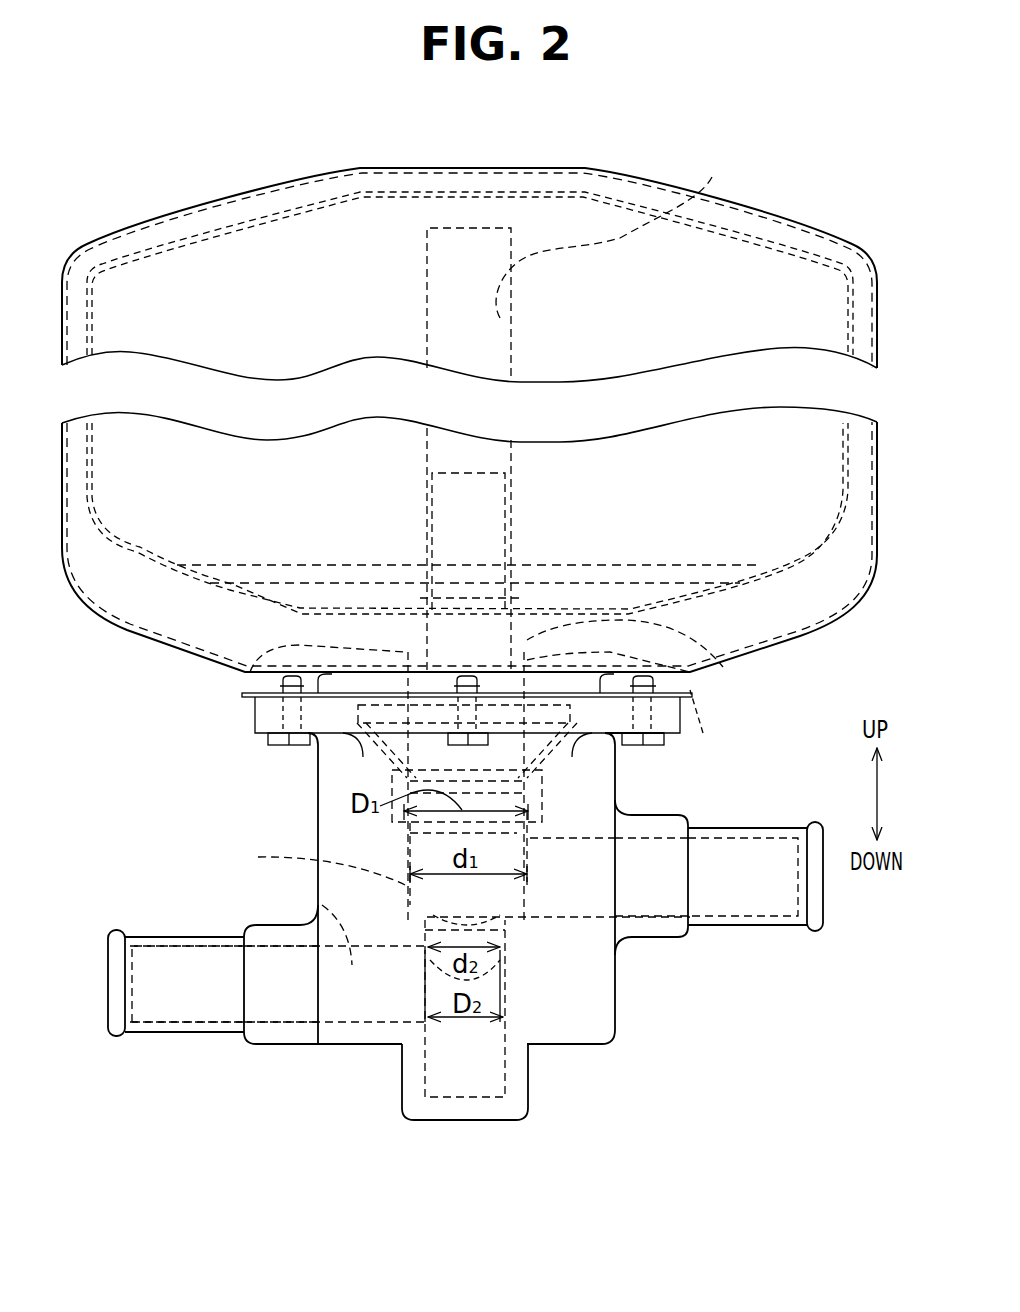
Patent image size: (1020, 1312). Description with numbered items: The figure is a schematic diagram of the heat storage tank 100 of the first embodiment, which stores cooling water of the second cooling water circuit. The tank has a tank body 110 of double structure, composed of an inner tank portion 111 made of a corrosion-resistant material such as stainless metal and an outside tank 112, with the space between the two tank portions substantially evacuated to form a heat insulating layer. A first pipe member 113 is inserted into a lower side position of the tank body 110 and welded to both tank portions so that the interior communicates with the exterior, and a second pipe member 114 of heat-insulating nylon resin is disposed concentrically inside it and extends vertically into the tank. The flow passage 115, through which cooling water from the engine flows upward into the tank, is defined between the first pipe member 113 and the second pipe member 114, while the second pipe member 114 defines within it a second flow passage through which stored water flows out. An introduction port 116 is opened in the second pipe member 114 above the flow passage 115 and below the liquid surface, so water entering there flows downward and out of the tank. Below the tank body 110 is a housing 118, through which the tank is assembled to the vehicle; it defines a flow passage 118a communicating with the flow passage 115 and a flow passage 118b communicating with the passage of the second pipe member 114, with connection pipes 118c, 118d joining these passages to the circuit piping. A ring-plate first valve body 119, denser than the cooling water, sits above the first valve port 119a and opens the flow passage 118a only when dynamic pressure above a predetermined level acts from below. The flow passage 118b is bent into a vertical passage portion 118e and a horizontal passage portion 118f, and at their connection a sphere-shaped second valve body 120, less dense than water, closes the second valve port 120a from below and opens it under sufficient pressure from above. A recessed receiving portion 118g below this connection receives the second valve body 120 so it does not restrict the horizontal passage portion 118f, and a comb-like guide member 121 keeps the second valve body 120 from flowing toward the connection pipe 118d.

The heat storage tank 100 is at (477, 449).
The tank body 110 is at (760, 652).
The inner tank portion 111 is at (823, 540).
The outside tank 112 is at (796, 640).
The first pipe member 113 is at (706, 664).
The second pipe member 114 is at (471, 557).
The flow passage 115 is at (242, 680).
The introduction port 116 is at (468, 247).
The housing 118 is at (467, 929).
The flow passage 118a is at (748, 858).
The flow passage 118b is at (193, 1005).
The connection pipe 118c is at (818, 937).
The connection pipe 118d is at (112, 1038).
The vertical passage portion 118e is at (400, 895).
The horizontal passage portion 118f is at (316, 905).
The recessed receiving portion 118g is at (483, 1083).
The first valve body 119 is at (392, 818).
The first valve port 119a is at (520, 840).
The second valve body 120 is at (395, 1060).
The second valve port 120a is at (510, 942).
The guide member 121 is at (418, 985).